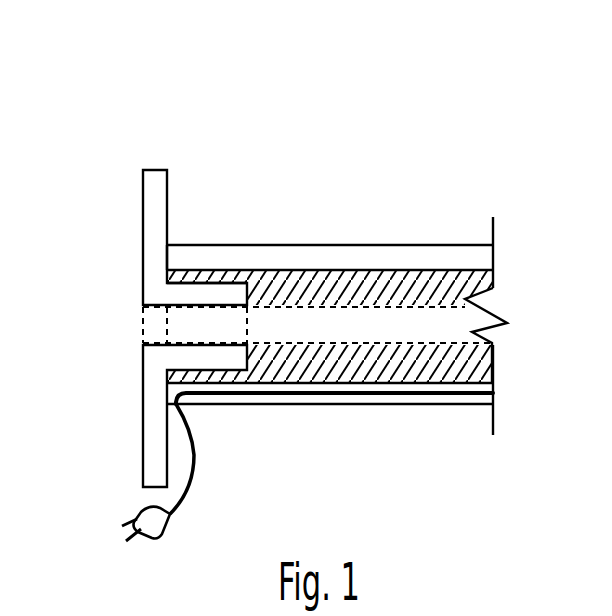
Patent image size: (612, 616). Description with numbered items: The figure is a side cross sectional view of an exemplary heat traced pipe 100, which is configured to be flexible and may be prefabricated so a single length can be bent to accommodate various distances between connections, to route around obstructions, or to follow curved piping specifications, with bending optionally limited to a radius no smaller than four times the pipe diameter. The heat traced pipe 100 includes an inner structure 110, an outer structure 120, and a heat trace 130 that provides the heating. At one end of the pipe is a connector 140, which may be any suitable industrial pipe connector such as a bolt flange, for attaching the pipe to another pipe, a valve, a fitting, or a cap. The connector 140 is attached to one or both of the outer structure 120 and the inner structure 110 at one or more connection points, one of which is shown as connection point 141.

The heat traced pipe 100 is at (112, 84).
The inner structure 110 is at (362, 343).
The outer structure 120 is at (357, 257).
The heat trace 130 is at (425, 395).
The connector 140 is at (143, 217).
The connection point 141 is at (168, 247).